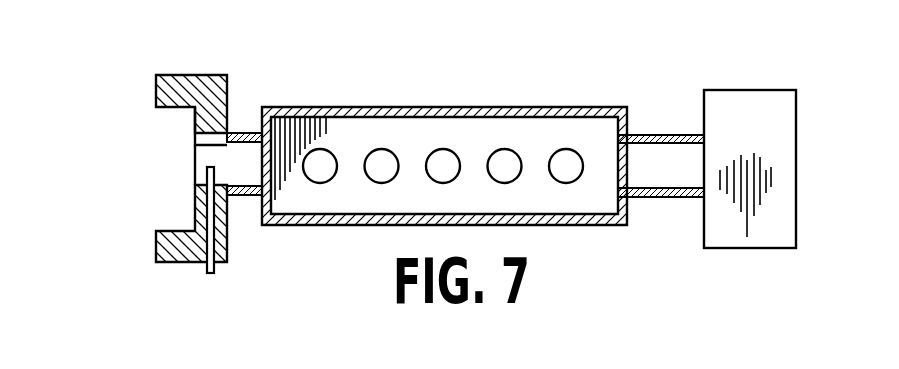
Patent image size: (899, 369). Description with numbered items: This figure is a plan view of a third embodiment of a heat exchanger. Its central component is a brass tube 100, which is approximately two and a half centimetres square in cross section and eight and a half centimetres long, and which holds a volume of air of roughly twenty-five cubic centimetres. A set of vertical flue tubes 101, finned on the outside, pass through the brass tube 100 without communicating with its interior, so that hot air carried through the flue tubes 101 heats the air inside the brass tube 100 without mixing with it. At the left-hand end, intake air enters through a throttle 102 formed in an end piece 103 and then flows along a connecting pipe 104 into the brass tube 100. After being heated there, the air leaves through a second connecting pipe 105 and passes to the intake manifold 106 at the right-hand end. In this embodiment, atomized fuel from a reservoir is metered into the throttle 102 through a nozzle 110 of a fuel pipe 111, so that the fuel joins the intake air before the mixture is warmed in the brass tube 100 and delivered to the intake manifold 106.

The brass tube 100 is at (394, 152).
The vertical flue tubes 101 is at (515, 107).
The throttle 102 is at (195, 133).
The end piece 103 is at (177, 262).
The connecting pipe 104 is at (252, 133).
The connecting pipe 105 is at (660, 200).
The intake manifold 106 is at (760, 90).
The nozzle 110 is at (200, 162).
The fuel pipe 111 is at (228, 241).